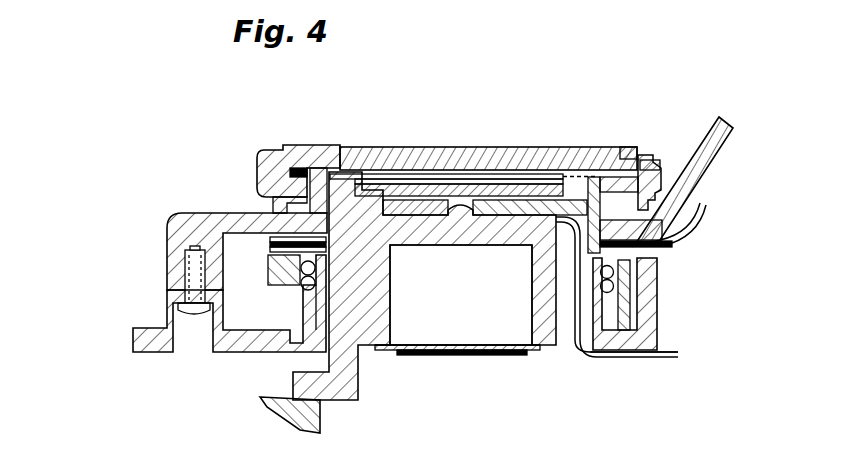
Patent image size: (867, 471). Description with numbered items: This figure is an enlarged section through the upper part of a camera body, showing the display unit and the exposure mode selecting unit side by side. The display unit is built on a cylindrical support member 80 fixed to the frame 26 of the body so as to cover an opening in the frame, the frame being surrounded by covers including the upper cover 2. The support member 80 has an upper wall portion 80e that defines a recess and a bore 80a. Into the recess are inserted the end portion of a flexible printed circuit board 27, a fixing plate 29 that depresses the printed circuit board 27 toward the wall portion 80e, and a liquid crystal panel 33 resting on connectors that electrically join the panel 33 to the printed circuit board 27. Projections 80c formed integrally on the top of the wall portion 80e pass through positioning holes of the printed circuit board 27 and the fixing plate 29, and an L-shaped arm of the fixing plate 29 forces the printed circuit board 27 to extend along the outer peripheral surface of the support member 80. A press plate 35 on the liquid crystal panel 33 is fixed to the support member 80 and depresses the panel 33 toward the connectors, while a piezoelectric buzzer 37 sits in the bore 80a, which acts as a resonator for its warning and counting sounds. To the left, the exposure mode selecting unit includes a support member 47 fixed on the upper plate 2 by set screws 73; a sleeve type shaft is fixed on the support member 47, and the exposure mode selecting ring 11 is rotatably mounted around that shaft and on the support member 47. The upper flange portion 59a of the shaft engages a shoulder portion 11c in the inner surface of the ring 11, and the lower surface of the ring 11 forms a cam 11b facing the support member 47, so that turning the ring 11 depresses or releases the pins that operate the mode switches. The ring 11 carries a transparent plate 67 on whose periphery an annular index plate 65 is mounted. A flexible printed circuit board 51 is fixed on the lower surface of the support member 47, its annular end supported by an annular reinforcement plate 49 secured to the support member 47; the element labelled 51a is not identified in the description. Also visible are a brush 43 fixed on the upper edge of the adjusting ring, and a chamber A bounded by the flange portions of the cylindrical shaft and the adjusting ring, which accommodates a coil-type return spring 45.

The upper cover 2 is at (144, 348).
The exposure mode selecting ring 11 is at (262, 172).
The cam 11b is at (660, 207).
The shoulder portion 11c is at (288, 146).
The frame 26 is at (318, 422).
The flexible printed circuit board 27 is at (628, 362).
The fixing plate 29 is at (566, 220).
The liquid crystal panel 33 is at (409, 183).
The press plate 35 is at (568, 178).
The piezoelectric buzzer 37 is at (445, 356).
The brush 43 is at (274, 251).
The return spring 45 is at (606, 278).
The support member 47 is at (180, 220).
The annular reinforcement plate 49 is at (632, 247).
The flexible printed circuit board 51 is at (700, 218).
The bearing block 51a is at (274, 213).
The upper flange portion 59a is at (318, 157).
The annular index plate 65 is at (622, 154).
The transparent plate 67 is at (520, 158).
The set screws 73 is at (190, 295).
The cylindrical support member 80 is at (375, 312).
The bore 80a is at (487, 334).
The projections 80c is at (463, 194).
The upper wall portion 80e is at (460, 205).
The chamber A is at (292, 283).